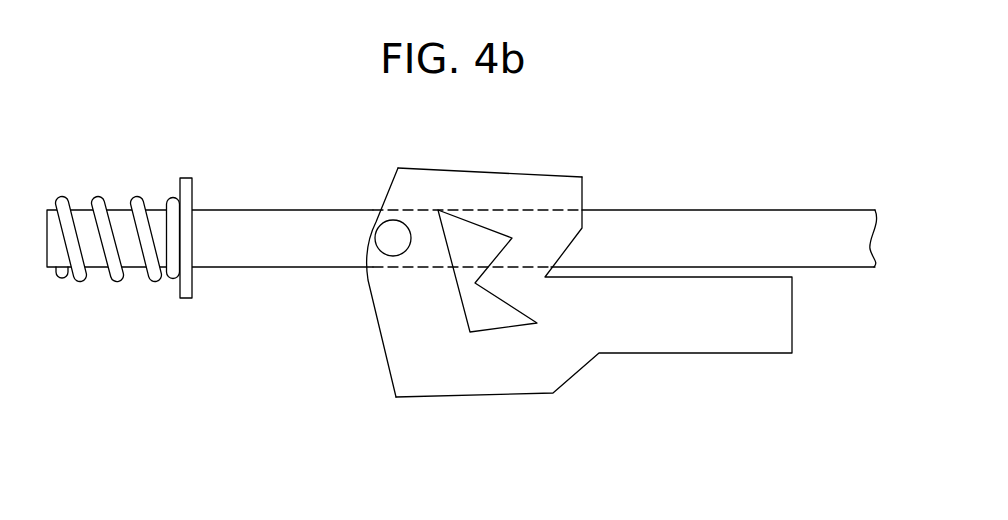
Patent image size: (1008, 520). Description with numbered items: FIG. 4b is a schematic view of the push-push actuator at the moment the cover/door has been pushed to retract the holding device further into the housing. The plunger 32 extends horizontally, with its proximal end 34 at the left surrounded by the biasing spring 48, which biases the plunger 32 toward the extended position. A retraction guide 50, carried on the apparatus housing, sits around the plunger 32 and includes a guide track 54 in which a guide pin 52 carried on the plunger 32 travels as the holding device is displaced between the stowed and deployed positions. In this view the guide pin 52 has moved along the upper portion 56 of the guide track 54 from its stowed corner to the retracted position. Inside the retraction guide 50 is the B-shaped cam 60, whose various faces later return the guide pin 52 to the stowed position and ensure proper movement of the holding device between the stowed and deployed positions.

The plunger 32 is at (703, 232).
The proximal end 34 is at (157, 218).
The biasing spring 48 is at (97, 205).
The retraction guide 50 is at (477, 397).
The guide pin 52 is at (382, 235).
The guide track 54 is at (415, 328).
The upper portion 56 is at (533, 187).
The cam 60 is at (497, 256).